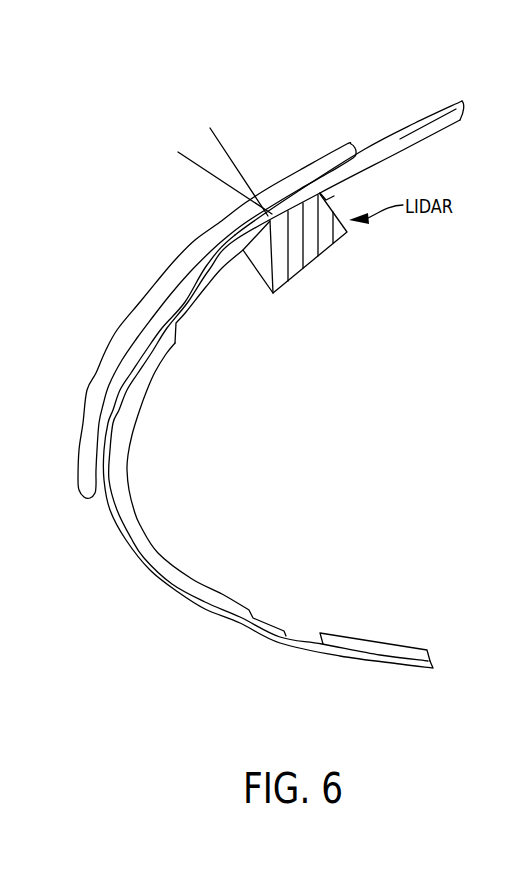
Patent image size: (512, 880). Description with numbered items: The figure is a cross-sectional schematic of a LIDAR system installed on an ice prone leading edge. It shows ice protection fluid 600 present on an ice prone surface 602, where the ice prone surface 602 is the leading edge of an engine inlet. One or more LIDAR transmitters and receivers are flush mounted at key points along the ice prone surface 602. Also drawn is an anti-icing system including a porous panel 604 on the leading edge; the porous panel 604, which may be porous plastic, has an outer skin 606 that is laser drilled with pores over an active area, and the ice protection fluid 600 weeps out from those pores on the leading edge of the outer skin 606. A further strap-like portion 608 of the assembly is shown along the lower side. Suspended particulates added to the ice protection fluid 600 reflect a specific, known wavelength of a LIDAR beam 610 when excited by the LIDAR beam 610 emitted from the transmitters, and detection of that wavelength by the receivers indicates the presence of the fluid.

The ice protection fluid 600 is at (86, 304).
The ice prone surface 602 is at (395, 91).
The porous panel 604 is at (110, 462).
The outer skin 606 is at (220, 268).
The lower strap 608 is at (190, 578).
The LIDAR beam 610 is at (188, 185).